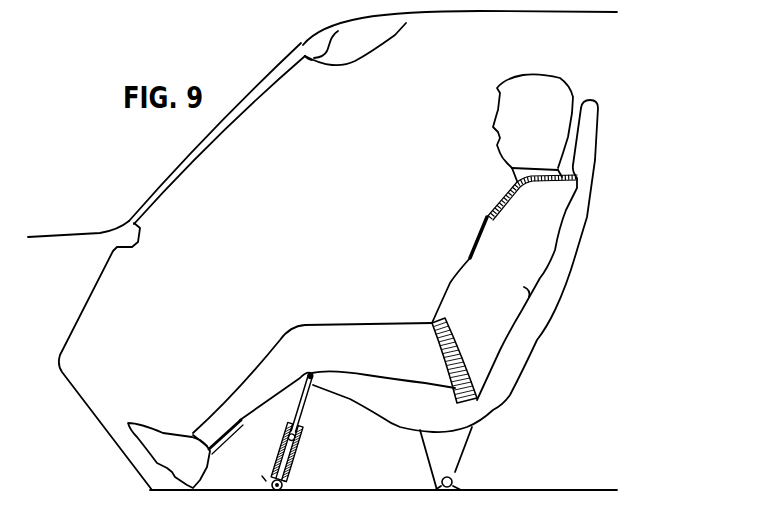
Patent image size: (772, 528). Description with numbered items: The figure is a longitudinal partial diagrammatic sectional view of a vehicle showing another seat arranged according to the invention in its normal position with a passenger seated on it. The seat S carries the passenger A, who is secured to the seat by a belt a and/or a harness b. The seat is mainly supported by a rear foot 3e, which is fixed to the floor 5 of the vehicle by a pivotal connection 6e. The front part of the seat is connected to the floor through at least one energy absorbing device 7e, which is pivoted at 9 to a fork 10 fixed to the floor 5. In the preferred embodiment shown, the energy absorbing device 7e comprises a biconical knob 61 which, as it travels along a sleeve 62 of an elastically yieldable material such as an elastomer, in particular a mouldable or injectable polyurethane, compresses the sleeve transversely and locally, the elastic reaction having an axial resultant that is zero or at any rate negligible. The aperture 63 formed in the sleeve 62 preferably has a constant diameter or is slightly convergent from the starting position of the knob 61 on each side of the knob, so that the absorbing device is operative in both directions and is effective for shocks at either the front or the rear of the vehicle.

The floor 5 is at (386, 490).
The passenger A is at (500, 257).
The harness b is at (550, 185).
The belt a is at (452, 339).
The seat S is at (566, 272).
The rear foot 3e is at (450, 452).
The pivotal connection 6e is at (453, 476).
The aperture 63 is at (288, 448).
The sleeve 62 is at (292, 468).
The energy absorbing device 7e is at (302, 450).
The biconical knob 61 is at (296, 439).
The pivot 9 is at (277, 490).
The fork 10 is at (266, 481).